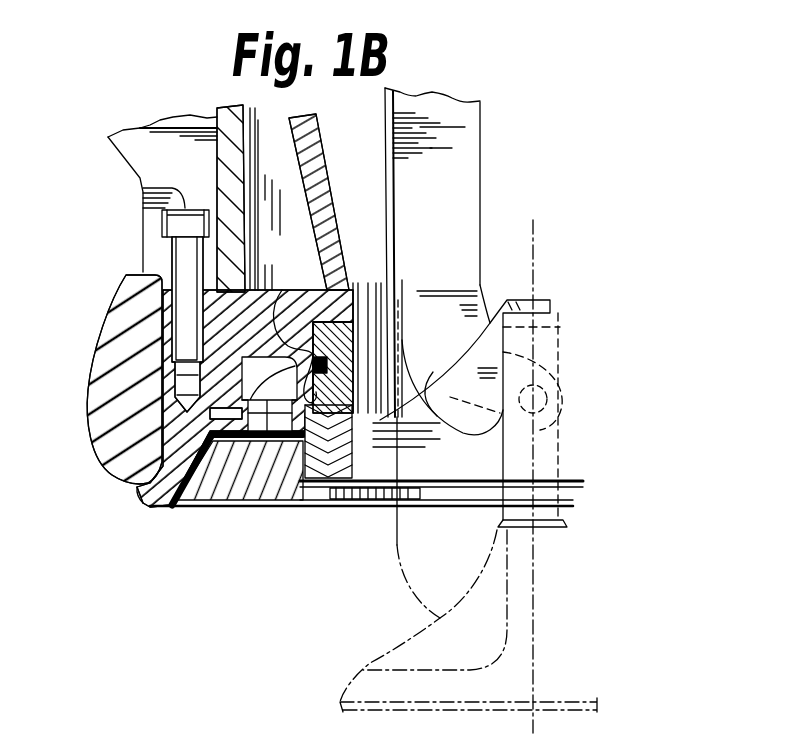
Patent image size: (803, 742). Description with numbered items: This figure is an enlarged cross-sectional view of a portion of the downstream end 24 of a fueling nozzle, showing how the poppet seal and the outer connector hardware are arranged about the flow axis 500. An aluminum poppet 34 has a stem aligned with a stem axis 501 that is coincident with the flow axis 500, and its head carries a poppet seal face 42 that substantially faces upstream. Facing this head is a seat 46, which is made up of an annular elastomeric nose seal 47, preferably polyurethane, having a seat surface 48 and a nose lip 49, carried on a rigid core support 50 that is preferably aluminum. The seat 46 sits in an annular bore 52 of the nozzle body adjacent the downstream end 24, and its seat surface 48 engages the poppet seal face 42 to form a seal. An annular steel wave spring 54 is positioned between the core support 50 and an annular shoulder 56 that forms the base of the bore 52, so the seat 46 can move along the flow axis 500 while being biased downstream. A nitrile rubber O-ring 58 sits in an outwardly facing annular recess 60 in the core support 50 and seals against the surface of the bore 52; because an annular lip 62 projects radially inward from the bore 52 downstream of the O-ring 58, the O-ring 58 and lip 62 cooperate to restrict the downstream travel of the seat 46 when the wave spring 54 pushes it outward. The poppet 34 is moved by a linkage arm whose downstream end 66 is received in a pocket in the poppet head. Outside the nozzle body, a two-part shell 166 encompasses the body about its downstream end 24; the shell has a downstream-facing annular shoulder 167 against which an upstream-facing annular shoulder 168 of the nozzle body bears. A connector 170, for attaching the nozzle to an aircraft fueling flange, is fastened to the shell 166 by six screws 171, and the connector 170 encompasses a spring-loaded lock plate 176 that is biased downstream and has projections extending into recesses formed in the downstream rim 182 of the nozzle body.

The downstream end 24 is at (106, 491).
The poppet 34 is at (535, 340).
The poppet seal face 42 is at (327, 482).
The seat 46 is at (291, 480).
The nose seal 47 is at (295, 492).
The seat surface 48 is at (401, 453).
The nose lip 49 is at (337, 510).
The core support 50 is at (338, 362).
The annular bore 52 is at (280, 292).
The wave spring 54 is at (345, 325).
The annular shoulder 56 is at (376, 283).
The O-ring 58 is at (210, 498).
The annular recess 60 is at (340, 330).
The annular lip 62 is at (292, 442).
The downstream end 66 is at (547, 421).
The shell 166 is at (147, 144).
The annular shoulder 167 is at (157, 317).
The annular shoulder 168 is at (150, 261).
The connector 170 is at (137, 488).
The screws 171 is at (143, 189).
The lock plate 176 is at (230, 503).
The downstream rim 182 is at (223, 393).
The flow axis 500 is at (535, 627).
The stem axis 501 is at (535, 627).